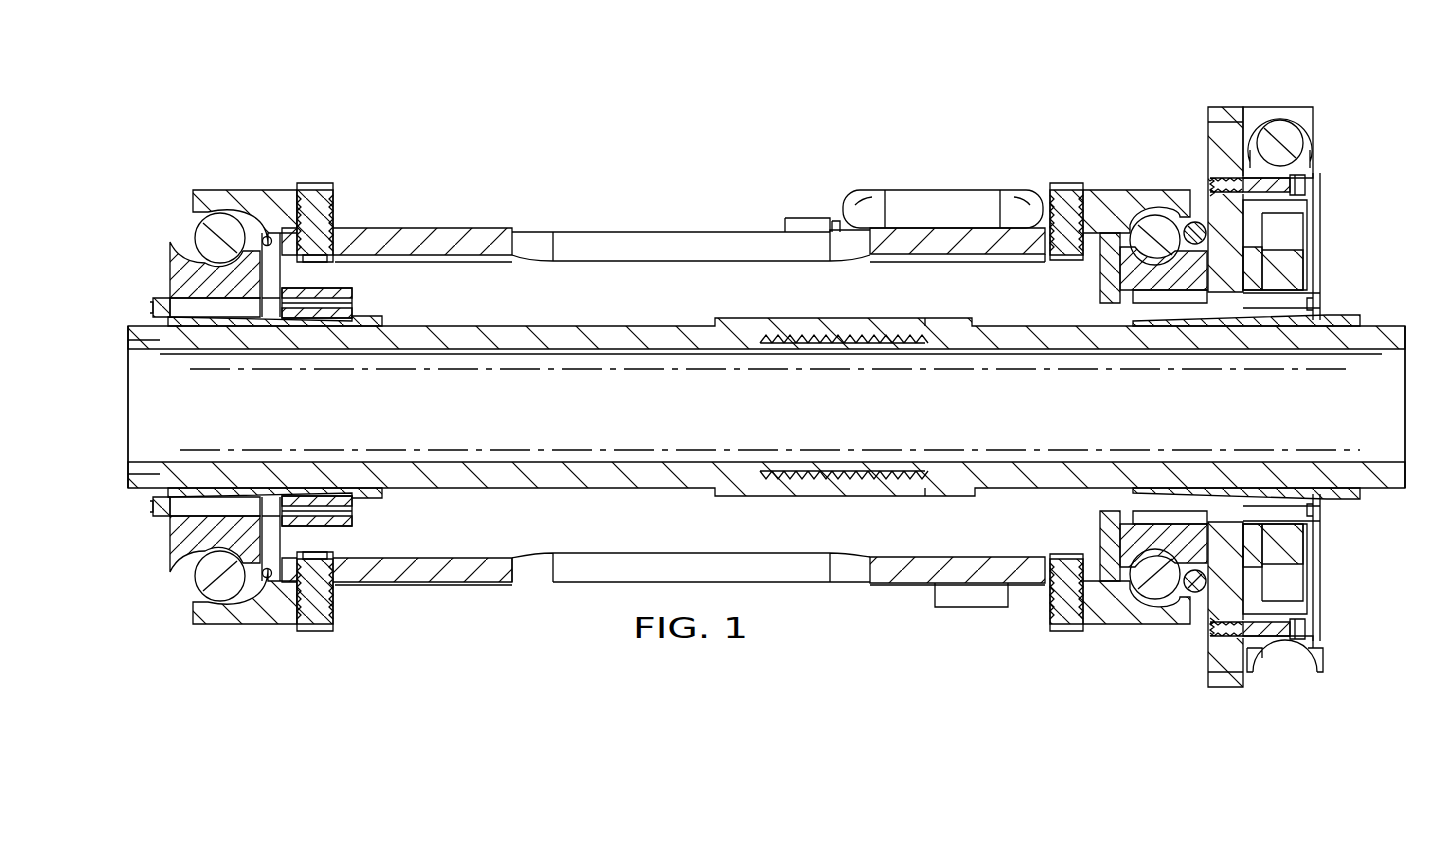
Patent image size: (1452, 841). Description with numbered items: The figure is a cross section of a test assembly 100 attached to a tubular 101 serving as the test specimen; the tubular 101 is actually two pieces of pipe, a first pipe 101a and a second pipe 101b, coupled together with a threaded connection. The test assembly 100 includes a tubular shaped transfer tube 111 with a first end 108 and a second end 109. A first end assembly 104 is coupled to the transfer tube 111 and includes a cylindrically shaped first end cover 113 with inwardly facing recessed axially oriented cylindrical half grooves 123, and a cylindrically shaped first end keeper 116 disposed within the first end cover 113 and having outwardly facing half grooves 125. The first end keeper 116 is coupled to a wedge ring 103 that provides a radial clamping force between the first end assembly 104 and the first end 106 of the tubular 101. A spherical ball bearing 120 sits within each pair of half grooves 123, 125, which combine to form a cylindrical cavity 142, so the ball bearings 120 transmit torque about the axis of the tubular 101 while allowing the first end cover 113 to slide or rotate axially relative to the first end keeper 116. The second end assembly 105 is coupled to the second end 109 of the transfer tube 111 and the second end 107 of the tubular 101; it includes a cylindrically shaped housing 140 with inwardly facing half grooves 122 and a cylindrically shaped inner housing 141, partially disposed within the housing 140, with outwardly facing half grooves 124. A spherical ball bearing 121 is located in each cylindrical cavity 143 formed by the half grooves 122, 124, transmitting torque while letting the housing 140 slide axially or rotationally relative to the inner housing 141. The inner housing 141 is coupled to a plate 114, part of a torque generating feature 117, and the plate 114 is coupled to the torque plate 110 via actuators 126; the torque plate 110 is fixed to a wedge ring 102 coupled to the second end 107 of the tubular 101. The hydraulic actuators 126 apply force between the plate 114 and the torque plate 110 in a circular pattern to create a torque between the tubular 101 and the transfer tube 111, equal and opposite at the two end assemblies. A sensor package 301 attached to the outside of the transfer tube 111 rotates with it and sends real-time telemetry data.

The test assembly 100 is at (690, 240).
The tubular 101 is at (1385, 322).
The first pipe 101a is at (942, 335).
The second pipe 101b is at (762, 335).
The wedge ring 102 is at (1305, 318).
The wedge ring 103 is at (286, 312).
The first end assembly 104 is at (215, 195).
The second end assembly 105 is at (1165, 200).
The first end of the tubular 106 is at (130, 358).
The second end of the tubular 107 is at (1405, 440).
The first end of the transfer tube 108 is at (412, 232).
The second end of the transfer tube 109 is at (930, 222).
The torque plate 110 is at (1300, 545).
The transfer tube 111 is at (450, 570).
The first end cover 113 is at (215, 616).
The plate 114 is at (1242, 674).
The first end keeper 116 is at (178, 552).
The torque generating feature 117 is at (1278, 113).
The spherical ball bearing 120 is at (205, 576).
The spherical ball bearing 121 is at (1155, 585).
The half grooves 122 is at (1120, 590).
The half grooves 123 is at (290, 585).
The half grooves 124 is at (1125, 553).
The half grooves 125 is at (252, 562).
The actuators 126 is at (1315, 143).
The housing 140 is at (1105, 200).
The inner housing 141 is at (1150, 290).
The cylindrical cavity 142 is at (250, 530).
The cylindrical cavity 143 is at (1132, 550).
The sensor package 301 is at (975, 608).